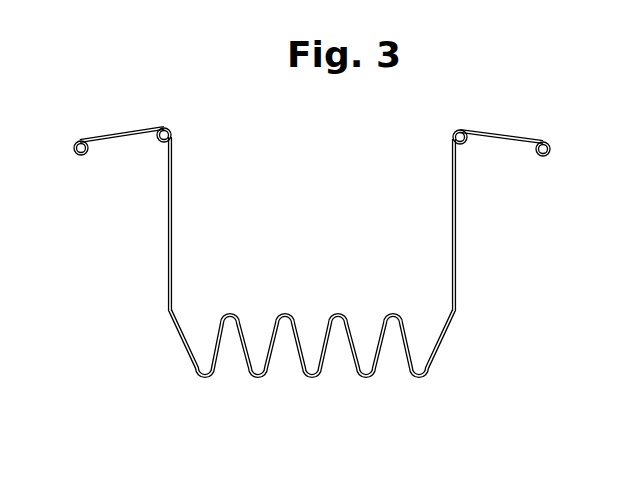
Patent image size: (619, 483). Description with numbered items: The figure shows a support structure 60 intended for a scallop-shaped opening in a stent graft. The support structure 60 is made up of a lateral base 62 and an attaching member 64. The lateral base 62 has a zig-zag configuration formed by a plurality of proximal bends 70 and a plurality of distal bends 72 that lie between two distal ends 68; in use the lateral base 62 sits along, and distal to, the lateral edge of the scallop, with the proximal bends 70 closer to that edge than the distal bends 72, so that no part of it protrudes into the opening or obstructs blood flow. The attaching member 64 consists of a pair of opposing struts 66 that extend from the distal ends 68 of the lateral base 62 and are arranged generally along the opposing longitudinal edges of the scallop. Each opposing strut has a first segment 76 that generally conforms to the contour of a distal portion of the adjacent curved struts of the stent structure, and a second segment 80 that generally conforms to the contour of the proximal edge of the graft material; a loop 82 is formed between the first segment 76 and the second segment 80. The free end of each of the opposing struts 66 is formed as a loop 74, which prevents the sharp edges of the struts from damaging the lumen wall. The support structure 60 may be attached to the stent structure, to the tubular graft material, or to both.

The support structure 60 is at (424, 82).
The lateral base 62 is at (369, 426).
The attaching member 64 is at (134, 307).
The opposing struts 66 is at (167, 221).
The distal ends 68 is at (204, 380).
The proximal bends 70 is at (232, 311).
The distal bends 72 is at (258, 380).
The loop 74 is at (75, 146).
The first segment 76 is at (172, 213).
The second segment 80 is at (114, 132).
The loop 82 is at (171, 128).